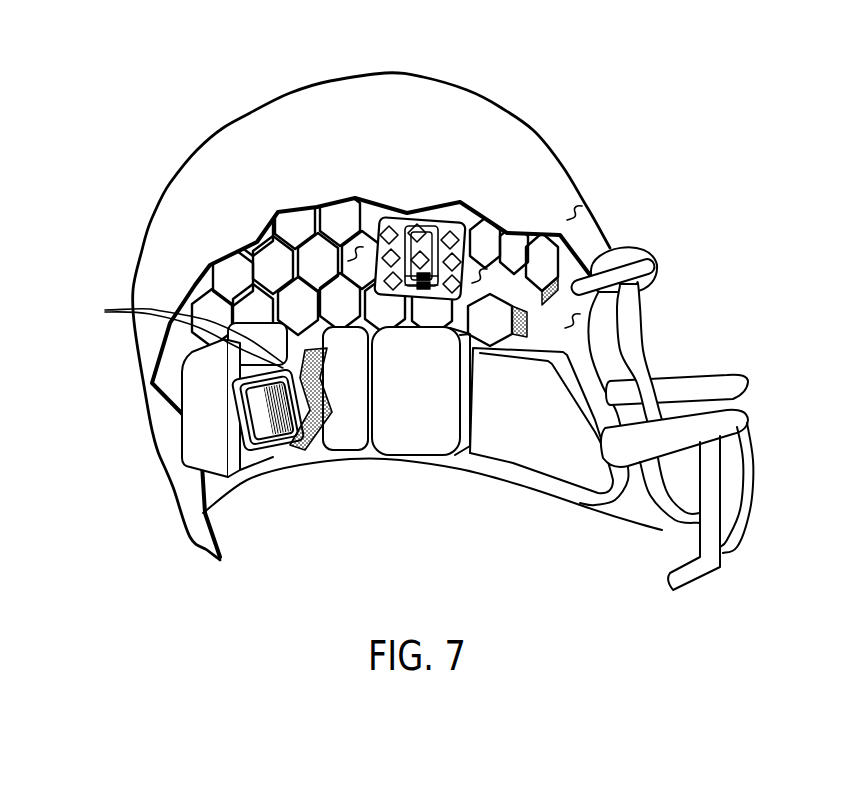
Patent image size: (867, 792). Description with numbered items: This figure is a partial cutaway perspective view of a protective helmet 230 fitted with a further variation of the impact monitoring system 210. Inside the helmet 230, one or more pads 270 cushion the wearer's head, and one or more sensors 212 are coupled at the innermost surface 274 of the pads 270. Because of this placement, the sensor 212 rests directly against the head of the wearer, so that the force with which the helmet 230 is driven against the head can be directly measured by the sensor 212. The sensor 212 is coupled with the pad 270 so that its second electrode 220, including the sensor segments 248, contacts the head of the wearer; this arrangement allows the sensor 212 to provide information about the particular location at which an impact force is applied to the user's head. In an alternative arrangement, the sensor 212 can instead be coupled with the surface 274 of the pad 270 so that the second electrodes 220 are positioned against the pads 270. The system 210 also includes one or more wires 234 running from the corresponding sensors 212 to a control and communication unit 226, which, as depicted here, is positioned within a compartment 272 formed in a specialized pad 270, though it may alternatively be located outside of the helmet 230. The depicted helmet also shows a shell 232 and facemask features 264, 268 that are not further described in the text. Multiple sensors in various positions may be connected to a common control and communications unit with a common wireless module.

The system 210 is at (650, 80).
The sensor 212 is at (458, 205).
The second electrode 220 is at (436, 222).
The control and communication unit 226 is at (262, 403).
The helmet 230 is at (452, 105).
The shell wall 232 is at (543, 178).
The wire 234 is at (174, 335).
The sensor segment 248 is at (402, 221).
The facemask attachment clip 264 is at (580, 212).
The facemask bar 268 is at (585, 318).
The pad 270 is at (372, 337).
The compartment 272 is at (277, 452).
The innermost surface 274 is at (355, 248).